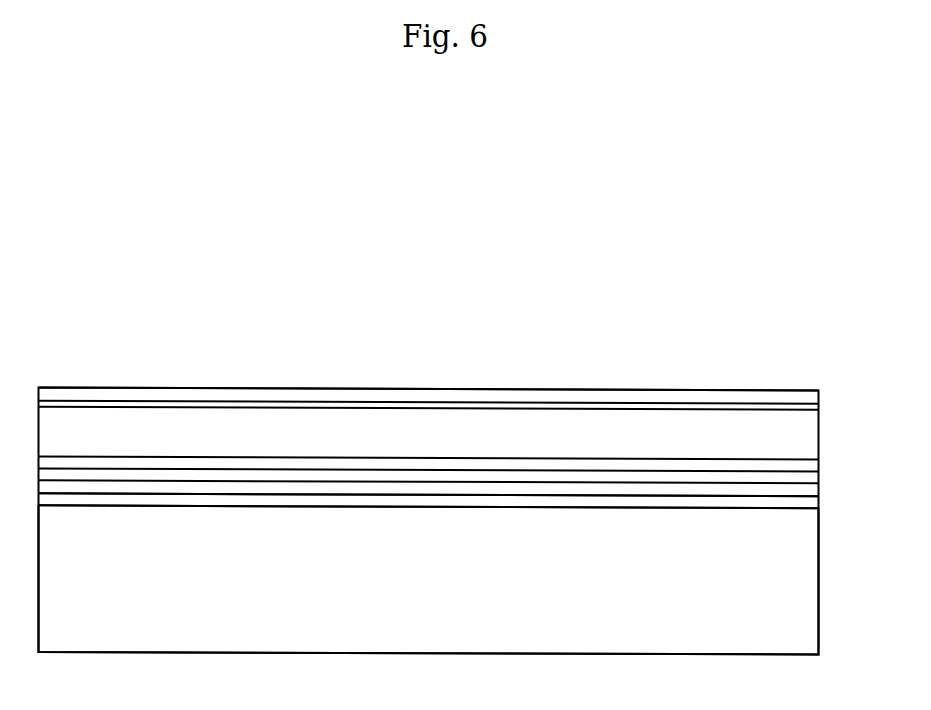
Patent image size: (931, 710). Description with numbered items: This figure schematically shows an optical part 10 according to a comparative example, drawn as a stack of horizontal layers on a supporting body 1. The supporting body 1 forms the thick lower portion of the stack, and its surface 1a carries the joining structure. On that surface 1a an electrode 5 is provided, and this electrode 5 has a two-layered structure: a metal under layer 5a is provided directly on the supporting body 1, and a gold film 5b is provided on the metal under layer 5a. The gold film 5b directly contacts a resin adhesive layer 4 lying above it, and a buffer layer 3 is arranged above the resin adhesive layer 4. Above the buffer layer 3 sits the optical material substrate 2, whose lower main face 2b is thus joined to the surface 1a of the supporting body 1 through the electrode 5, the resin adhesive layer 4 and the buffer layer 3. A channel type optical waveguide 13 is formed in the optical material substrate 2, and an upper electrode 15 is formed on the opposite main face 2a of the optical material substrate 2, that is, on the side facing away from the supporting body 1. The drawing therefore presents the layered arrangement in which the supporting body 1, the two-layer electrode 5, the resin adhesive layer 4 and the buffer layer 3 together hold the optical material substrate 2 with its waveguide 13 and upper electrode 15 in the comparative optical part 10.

The optical part 10 is at (823, 363).
The supporting body 1 is at (812, 595).
The surface of the supporting body 1a is at (725, 506).
The optical material substrate 2 is at (813, 425).
The main face of the optical material substrate 2a is at (697, 400).
The main face of the optical material substrate 2b is at (671, 458).
The buffer layer 3 is at (822, 462).
The resin adhesive layer 4 is at (813, 477).
The electrode 5 is at (825, 478).
The metal under layer 5a is at (501, 500).
The gold film 5b is at (435, 488).
The channel type optical waveguide 13 is at (473, 408).
The upper electrode 15 is at (320, 388).